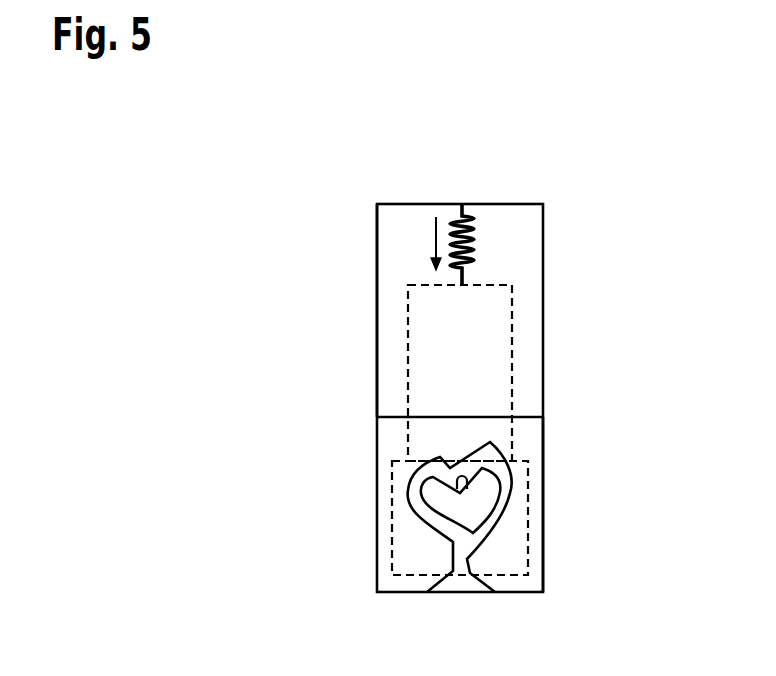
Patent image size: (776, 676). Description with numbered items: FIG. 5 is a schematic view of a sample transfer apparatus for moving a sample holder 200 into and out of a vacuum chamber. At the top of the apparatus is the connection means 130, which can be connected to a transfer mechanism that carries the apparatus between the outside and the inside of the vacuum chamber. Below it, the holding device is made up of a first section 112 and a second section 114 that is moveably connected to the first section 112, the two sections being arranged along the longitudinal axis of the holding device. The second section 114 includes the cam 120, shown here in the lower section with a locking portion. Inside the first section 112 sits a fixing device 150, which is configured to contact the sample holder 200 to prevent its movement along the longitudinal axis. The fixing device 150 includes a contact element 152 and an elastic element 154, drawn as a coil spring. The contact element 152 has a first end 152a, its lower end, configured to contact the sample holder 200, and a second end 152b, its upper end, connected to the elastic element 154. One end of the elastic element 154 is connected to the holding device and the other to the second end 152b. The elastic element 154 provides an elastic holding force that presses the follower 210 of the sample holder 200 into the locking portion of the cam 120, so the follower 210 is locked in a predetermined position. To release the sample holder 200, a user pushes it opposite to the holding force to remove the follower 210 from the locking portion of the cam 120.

The first section 112 is at (377, 248).
The second section 114 is at (543, 437).
The cam 120 is at (408, 533).
The connection means 130 is at (393, 204).
The fixing device 150 is at (490, 340).
The contact element 152 is at (513, 320).
The first end 152a is at (410, 458).
The second end 152b is at (425, 284).
The elastic element 154 is at (486, 242).
The sample holder 200 is at (392, 488).
The follower 210 is at (470, 482).